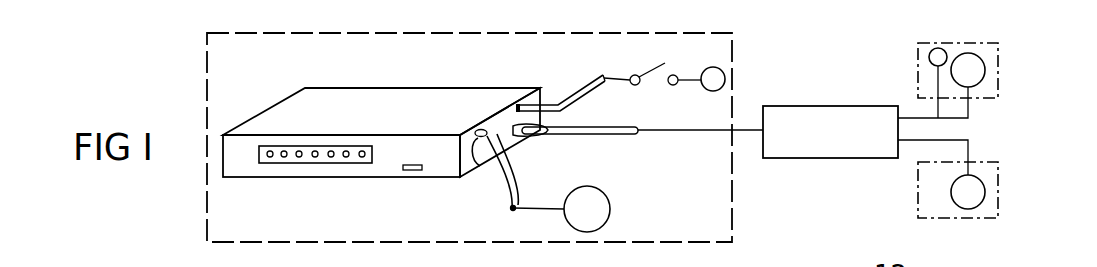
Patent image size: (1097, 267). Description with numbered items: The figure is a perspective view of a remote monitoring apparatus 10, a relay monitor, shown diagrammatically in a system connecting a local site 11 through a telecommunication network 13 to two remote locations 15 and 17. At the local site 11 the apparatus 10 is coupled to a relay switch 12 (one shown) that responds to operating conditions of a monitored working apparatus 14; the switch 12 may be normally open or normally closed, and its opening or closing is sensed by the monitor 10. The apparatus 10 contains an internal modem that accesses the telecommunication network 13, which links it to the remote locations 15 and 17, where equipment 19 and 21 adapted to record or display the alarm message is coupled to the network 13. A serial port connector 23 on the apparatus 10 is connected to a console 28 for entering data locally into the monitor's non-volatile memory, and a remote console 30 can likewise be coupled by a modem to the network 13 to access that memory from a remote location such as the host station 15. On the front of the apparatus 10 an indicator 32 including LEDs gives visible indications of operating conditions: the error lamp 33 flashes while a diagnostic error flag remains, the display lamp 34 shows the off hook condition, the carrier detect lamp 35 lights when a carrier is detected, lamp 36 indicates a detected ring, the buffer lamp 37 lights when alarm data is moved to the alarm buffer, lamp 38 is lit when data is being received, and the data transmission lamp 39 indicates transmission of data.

The remote monitoring apparatus 10 is at (232, 78).
The local site 11 is at (207, 33).
The relay switch 12 is at (627, 72).
The telecommunication network 13 is at (833, 166).
The monitored working apparatus 14 is at (729, 62).
The remote location 15 is at (1001, 85).
The remote location 17 is at (1001, 200).
The equipment 19 is at (982, 58).
The equipment 21 is at (951, 192).
The serial port connector 23 is at (480, 170).
The console 28 is at (611, 208).
The remote console 30 is at (930, 54).
The indicator 32 is at (250, 155).
The error lamp 33 is at (362, 150).
The display lamp 34 is at (284, 158).
The carrier detect lamp 35 is at (299, 158).
The lamp 36 is at (269, 158).
The buffer lamp 37 is at (346, 150).
The lamp 38 is at (331, 158).
The data transmission lamp 39 is at (315, 158).